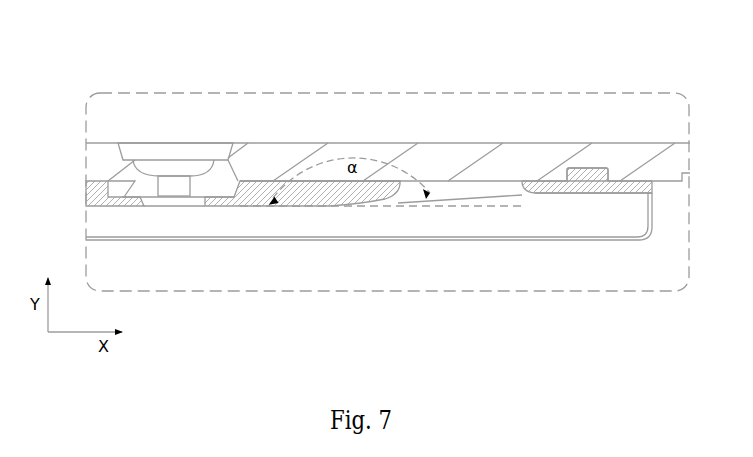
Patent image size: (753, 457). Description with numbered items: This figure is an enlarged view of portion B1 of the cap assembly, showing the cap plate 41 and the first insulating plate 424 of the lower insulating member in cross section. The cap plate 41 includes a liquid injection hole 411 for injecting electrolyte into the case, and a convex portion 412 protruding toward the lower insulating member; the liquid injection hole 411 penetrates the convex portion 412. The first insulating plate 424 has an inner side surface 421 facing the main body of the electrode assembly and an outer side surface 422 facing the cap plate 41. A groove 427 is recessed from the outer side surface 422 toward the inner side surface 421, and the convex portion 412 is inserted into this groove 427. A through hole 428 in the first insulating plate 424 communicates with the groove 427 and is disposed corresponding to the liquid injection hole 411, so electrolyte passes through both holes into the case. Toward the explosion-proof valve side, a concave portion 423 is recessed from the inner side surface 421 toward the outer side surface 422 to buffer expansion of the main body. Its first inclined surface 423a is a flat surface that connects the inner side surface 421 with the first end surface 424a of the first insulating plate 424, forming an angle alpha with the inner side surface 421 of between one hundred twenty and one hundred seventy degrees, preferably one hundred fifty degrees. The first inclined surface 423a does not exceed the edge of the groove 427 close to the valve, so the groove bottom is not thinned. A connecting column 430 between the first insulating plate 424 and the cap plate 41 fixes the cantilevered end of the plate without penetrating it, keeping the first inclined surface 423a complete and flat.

The portion B1 is at (405, 31).
The cap plate 41 is at (440, 155).
The liquid injection hole 411 is at (177, 154).
The convex portion 412 is at (112, 183).
The inner side surface 421 is at (253, 209).
The outer side surface 422 is at (258, 179).
The concave portion 423 is at (672, 201).
The first inclined surface 423a is at (562, 199).
The first insulating plate 424 is at (312, 198).
The first end surface 424a is at (653, 180).
The groove 427 is at (110, 203).
The through hole 428 is at (180, 199).
The connecting column 430 is at (578, 167).